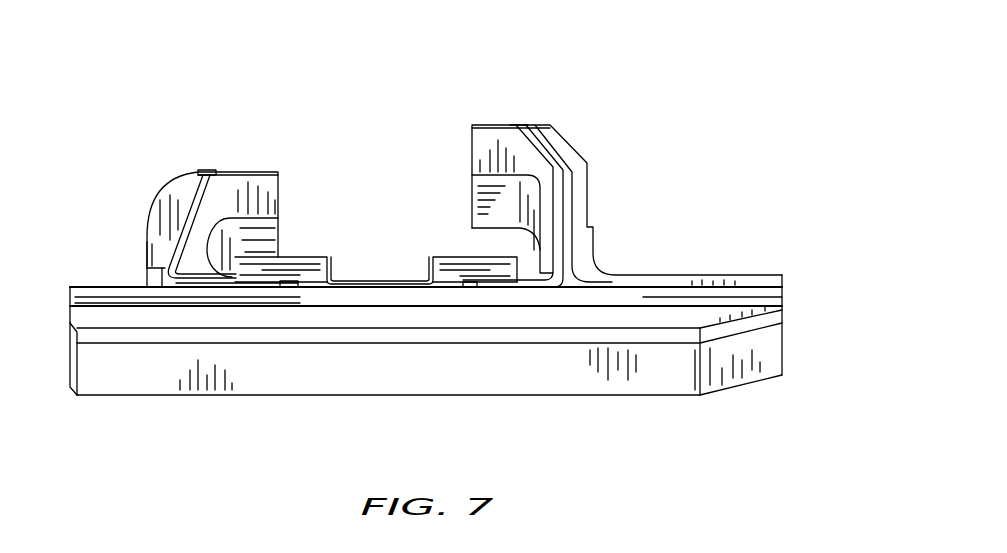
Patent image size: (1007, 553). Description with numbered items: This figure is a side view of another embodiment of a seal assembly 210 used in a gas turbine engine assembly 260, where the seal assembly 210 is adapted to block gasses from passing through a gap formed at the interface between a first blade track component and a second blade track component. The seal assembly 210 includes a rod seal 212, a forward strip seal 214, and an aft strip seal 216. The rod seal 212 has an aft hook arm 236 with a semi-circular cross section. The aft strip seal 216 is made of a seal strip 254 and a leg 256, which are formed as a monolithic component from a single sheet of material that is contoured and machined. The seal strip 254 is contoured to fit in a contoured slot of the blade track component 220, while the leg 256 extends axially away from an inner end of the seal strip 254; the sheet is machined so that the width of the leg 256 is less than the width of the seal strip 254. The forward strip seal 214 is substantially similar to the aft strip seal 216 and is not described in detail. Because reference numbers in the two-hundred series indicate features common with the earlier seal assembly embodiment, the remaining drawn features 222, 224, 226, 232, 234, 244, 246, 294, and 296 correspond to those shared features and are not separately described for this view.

The seal assembly 210 is at (427, 227).
The rod seal 212 is at (167, 310).
The forward strip seal 214 is at (157, 232).
The aft strip seal 216 is at (577, 247).
The component 220 is at (468, 337).
The substrate edge 222 is at (786, 308).
The first contact body 224 is at (165, 197).
The second contact body 226 is at (592, 182).
The trace layer 232 is at (322, 299).
The first bonding pad 234 is at (292, 256).
The aft hook arm 236 is at (462, 256).
The first lead 244 is at (193, 191).
The conductive layer 246 is at (253, 304).
The seal strip 254 is at (560, 153).
The leg 256 is at (510, 290).
The gas turbine engine assembly 260 is at (641, 245).
The first lead tip 294 is at (210, 169).
The second lead tip 296 is at (517, 122).